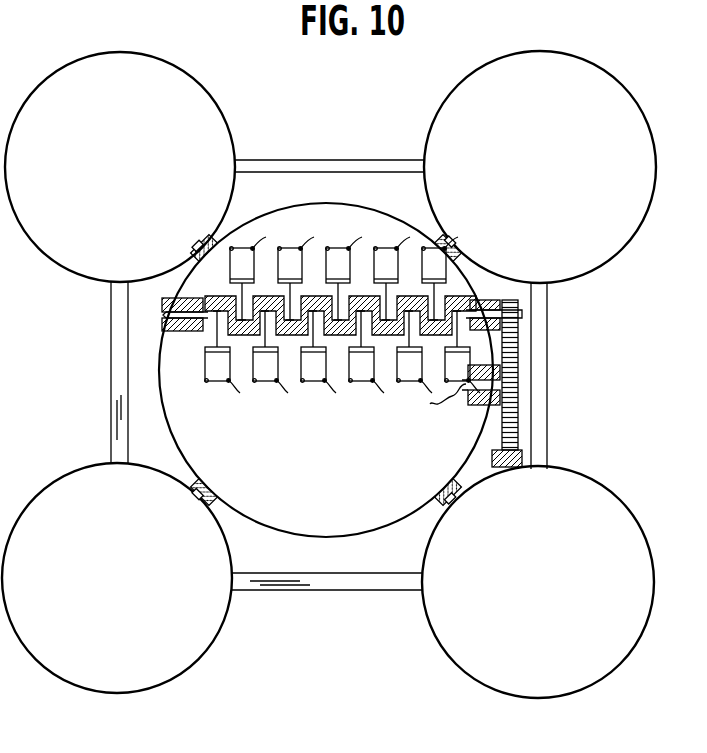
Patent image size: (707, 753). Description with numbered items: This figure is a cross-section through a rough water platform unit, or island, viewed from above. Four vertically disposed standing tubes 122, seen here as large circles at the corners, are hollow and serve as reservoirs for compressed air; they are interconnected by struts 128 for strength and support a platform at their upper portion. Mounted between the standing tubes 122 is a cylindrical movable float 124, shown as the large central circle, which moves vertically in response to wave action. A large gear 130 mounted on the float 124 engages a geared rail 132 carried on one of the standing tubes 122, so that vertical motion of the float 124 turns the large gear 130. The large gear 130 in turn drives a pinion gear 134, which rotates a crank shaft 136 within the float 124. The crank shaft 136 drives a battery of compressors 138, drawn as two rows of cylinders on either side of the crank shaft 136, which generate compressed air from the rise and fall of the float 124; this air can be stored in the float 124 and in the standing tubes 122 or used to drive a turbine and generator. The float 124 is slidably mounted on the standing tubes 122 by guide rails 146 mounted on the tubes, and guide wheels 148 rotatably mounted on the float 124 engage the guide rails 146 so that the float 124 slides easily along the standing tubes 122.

The standing tubes 122 is at (217, 127).
The movable float 124 is at (378, 520).
The struts 128 is at (326, 162).
The large gear 130 is at (519, 356).
The geared rail 132 is at (508, 456).
The pinion gear 134 is at (520, 302).
The crank shaft 136 is at (338, 336).
The compressors 138 is at (350, 247).
The guide rail 146 is at (201, 248).
The guide wheel 148 is at (216, 239).